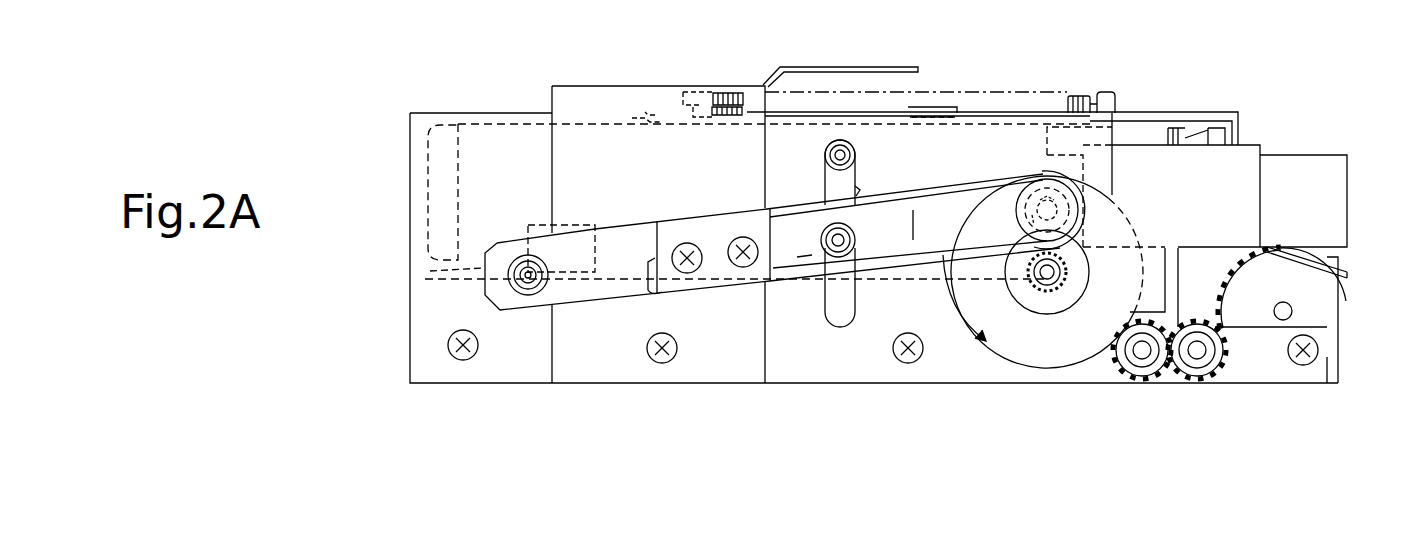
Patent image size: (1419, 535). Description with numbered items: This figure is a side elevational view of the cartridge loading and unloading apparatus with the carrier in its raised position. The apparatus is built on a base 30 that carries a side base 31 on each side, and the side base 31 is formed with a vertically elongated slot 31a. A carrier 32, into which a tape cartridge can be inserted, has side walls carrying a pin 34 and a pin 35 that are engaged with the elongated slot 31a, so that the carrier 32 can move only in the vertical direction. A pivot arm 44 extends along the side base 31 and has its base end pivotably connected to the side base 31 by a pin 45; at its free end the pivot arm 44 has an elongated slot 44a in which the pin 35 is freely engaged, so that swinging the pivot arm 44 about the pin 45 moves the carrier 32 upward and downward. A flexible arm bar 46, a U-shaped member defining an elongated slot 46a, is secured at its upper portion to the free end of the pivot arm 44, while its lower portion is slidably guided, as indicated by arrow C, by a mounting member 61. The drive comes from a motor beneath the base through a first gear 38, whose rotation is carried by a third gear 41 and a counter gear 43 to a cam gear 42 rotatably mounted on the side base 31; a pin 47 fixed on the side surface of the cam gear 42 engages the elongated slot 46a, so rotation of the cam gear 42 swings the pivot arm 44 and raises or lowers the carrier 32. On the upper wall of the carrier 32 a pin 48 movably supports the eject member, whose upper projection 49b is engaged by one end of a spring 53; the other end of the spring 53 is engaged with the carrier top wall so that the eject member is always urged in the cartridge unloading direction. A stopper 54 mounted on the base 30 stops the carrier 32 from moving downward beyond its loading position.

The base 30 is at (456, 383).
The side base 31 is at (767, 376).
The vertically elongated slot 31a is at (858, 190).
The carrier 32 is at (592, 125).
The pin 34 is at (838, 140).
The pin 35 is at (838, 258).
The first gear 38 is at (1350, 300).
The third gear 41 is at (1207, 364).
The cam gear 42 is at (1072, 384).
The counter gear 43 is at (1146, 383).
The pivot arm 44 is at (600, 306).
The elongated slot 44a is at (857, 258).
The pin 45 is at (528, 292).
The flexible arm bar 46 is at (895, 258).
The elongated slot 46a is at (996, 226).
The pin 47 is at (1112, 196).
The pin 48 is at (955, 108).
The upper projection 49b is at (1110, 92).
The spring 53 is at (1017, 90).
The stopper 54 is at (1167, 250).
The mounting member 61 is at (716, 289).
The arrow C is at (798, 262).